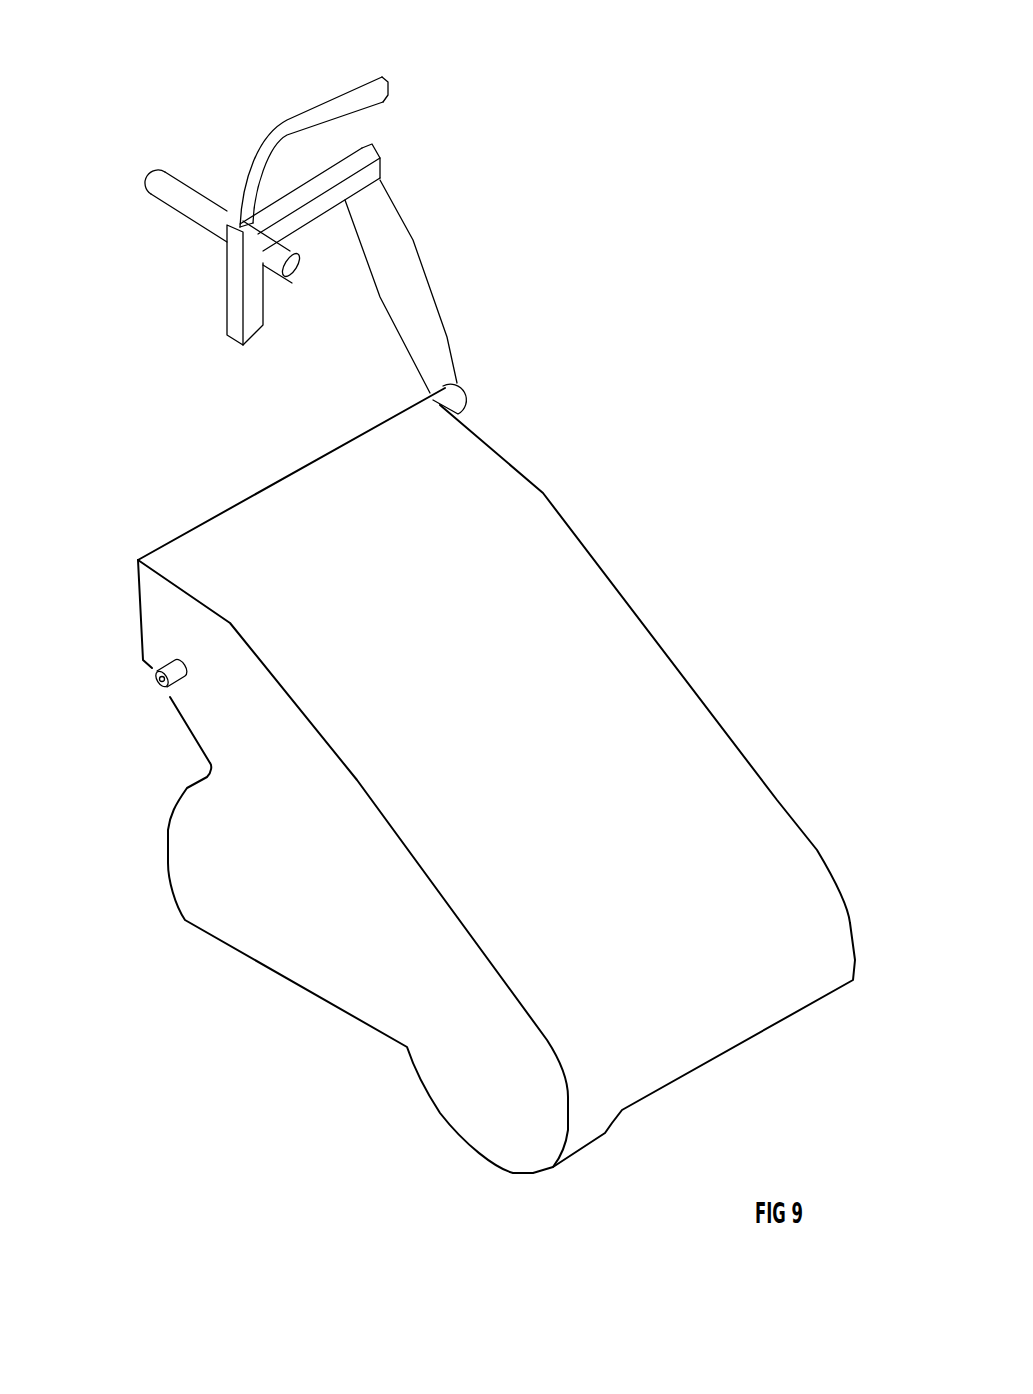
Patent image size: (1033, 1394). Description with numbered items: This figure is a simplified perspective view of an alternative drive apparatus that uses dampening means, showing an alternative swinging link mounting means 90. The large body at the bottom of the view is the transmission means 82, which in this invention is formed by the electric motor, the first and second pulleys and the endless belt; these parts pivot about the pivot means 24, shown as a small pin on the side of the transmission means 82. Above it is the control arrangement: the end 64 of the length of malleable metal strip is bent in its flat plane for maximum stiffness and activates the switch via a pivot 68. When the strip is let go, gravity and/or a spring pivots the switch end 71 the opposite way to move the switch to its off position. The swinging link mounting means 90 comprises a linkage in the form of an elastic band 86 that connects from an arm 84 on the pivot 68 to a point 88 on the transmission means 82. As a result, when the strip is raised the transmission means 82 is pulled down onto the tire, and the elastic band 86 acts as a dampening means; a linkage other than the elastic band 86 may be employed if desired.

The transmission means 82 is at (700, 643).
The pivot means 24 is at (158, 683).
The swinging link mounting means 90 is at (503, 88).
The end of the length of malleable metal 64 is at (257, 163).
The arm 84 is at (327, 208).
The pivot 68 is at (177, 192).
The switch end 71 is at (225, 300).
The elastic band 86 is at (428, 262).
The point on the transmission means 88 is at (477, 390).